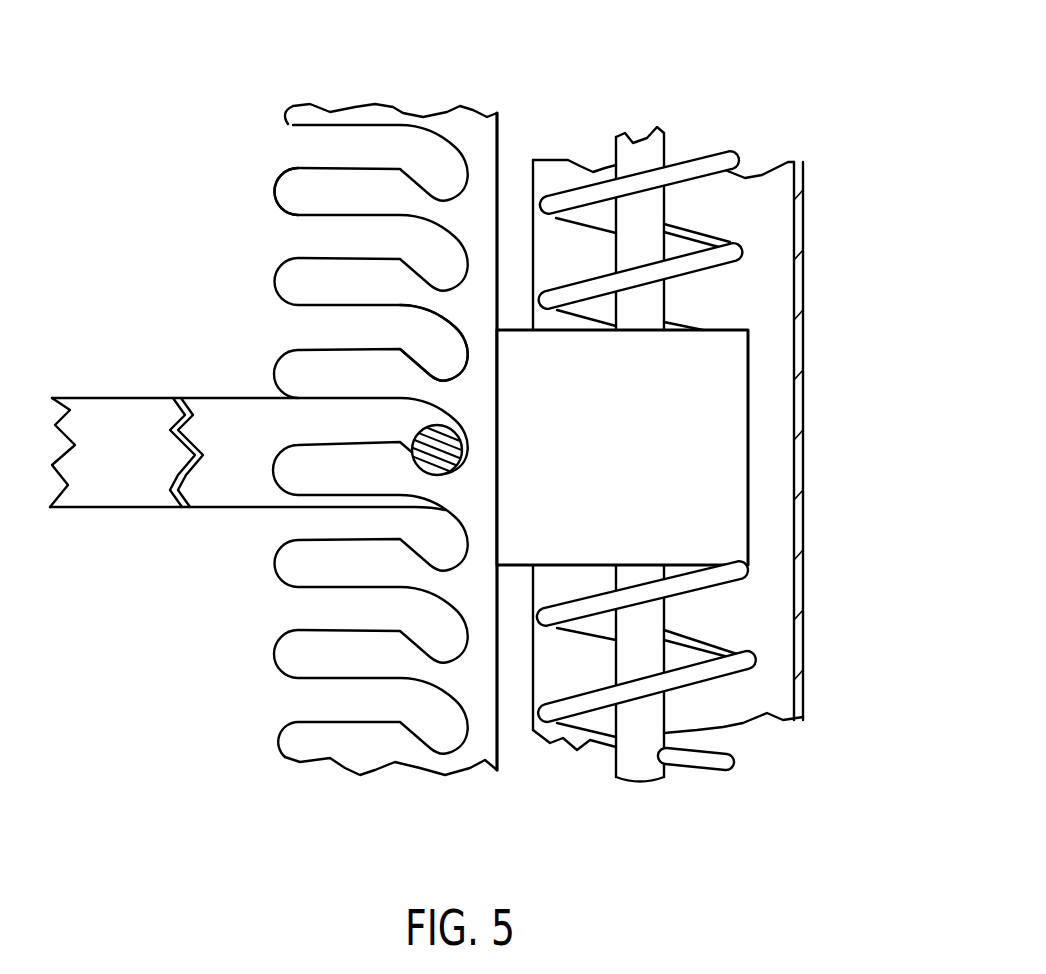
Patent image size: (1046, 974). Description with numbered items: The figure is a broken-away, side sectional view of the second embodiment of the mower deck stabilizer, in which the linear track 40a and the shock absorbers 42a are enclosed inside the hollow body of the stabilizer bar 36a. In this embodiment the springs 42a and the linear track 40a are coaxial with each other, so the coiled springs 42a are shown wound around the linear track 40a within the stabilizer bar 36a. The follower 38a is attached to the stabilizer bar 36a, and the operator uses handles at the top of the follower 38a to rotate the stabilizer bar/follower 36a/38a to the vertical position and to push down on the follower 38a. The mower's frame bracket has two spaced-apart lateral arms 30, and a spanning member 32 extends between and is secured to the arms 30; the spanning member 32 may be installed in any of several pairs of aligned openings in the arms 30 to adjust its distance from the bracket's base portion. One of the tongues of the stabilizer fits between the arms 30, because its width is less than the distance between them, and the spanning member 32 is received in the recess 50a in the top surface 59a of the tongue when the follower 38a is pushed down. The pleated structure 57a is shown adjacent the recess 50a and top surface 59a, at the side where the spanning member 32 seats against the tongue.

The lateral arm 30 is at (145, 420).
The spanning member 32 is at (460, 450).
The stabilizer bar 36a is at (793, 409).
The follower 38a is at (500, 157).
The linear track 40a is at (657, 147).
The shock absorber 42a is at (740, 247).
The recess 50a is at (455, 372).
The bellows 57a is at (275, 187).
The top surface 59a is at (351, 167).